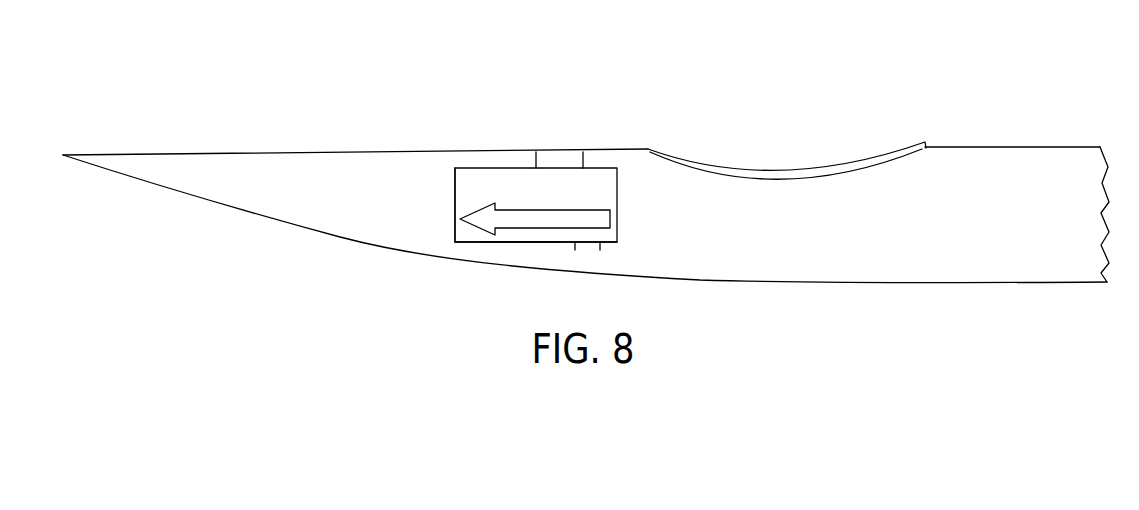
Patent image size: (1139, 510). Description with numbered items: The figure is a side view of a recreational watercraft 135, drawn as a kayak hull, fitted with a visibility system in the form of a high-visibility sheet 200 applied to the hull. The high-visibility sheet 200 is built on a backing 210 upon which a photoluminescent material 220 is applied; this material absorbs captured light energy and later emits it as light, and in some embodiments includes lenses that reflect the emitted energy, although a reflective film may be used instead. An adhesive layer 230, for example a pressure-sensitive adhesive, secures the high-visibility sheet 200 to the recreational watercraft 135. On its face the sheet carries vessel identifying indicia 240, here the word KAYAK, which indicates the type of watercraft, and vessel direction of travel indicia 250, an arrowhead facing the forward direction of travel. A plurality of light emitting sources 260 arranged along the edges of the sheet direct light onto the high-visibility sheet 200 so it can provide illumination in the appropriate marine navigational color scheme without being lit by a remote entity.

The recreational watercraft 135 is at (993, 120).
The high-visibility sheet 200 is at (623, 168).
The backing 210 is at (456, 196).
The photoluminescent material 220 is at (461, 241).
The adhesive layer 230 is at (503, 242).
The vessel identifying indicia 240 is at (603, 190).
The vessel direction of travel indicia 250 is at (611, 219).
The light emitting sources 260 is at (540, 152).